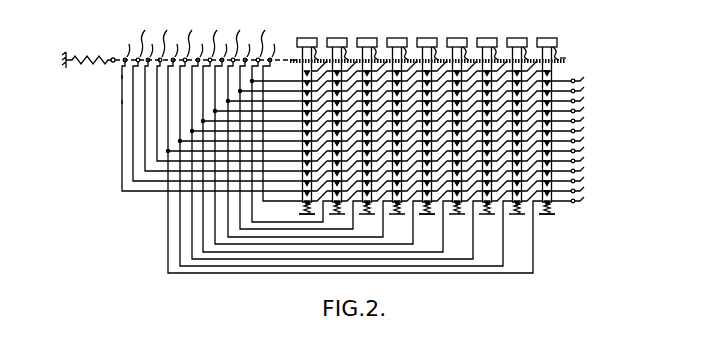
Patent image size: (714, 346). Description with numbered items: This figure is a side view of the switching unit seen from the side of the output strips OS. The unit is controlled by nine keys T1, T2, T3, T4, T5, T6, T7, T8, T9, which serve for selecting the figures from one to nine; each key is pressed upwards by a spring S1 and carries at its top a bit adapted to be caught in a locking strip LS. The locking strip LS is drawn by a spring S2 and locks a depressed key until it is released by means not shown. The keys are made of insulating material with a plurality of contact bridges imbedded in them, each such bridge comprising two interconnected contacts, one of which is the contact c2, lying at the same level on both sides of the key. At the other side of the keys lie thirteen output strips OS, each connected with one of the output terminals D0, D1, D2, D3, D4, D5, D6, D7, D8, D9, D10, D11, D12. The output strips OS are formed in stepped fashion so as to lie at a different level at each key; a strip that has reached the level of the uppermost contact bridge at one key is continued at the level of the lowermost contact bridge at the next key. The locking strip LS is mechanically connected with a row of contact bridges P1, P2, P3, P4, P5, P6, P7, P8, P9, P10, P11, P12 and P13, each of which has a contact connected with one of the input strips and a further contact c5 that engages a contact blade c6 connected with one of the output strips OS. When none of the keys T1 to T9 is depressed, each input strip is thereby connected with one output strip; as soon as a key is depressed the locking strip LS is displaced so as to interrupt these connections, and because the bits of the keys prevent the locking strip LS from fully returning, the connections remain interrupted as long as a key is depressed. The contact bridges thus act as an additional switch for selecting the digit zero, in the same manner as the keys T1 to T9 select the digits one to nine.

The spring S2 is at (97, 52).
The spring S1 is at (429, 221).
The locking strip LS is at (569, 55).
The output strips OS is at (299, 211).
The contact c2 is at (557, 207).
The contact c5 is at (119, 81).
The contact blade c6 is at (119, 107).
The contact bridge P1 is at (228, 104).
The contact bridge P2 is at (222, 100).
The contact bridge P3 is at (216, 114).
The contact bridge P4 is at (283, 119).
The contact bridge P5 is at (291, 121).
The contact bridge P6 is at (300, 133).
The contact bridge P7 is at (309, 128).
The contact bridge P8 is at (317, 140).
The contact bridge P9 is at (326, 136).
The contact bridge P10 is at (336, 148).
The contact bridge P11 is at (345, 143).
The contact bridge P12 is at (354, 155).
The pulse contact switch P13 is at (234, 90).
The key T1 is at (304, 32).
The key T2 is at (334, 32).
The key T3 is at (364, 32).
The key T4 is at (394, 32).
The key T5 is at (424, 32).
The key T6 is at (454, 32).
The key T7 is at (484, 32).
The key T8 is at (514, 32).
The key T9 is at (544, 32).
The output terminal D0 is at (576, 77).
The output terminal D1 is at (586, 91).
The output terminal D2 is at (576, 97).
The output terminal D3 is at (586, 111).
The output terminal D4 is at (577, 117).
The output terminal D5 is at (586, 131).
The output terminal D6 is at (577, 137).
The output terminal D7 is at (586, 151).
The output terminal D8 is at (576, 157).
The output terminal D9 is at (586, 171).
The output terminal D10 is at (579, 177).
The output terminal D11 is at (588, 191).
The output terminal D12 is at (579, 197).